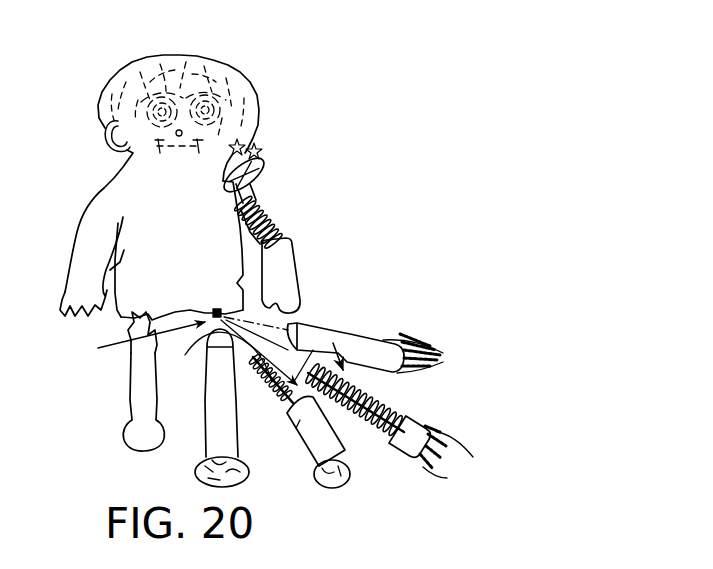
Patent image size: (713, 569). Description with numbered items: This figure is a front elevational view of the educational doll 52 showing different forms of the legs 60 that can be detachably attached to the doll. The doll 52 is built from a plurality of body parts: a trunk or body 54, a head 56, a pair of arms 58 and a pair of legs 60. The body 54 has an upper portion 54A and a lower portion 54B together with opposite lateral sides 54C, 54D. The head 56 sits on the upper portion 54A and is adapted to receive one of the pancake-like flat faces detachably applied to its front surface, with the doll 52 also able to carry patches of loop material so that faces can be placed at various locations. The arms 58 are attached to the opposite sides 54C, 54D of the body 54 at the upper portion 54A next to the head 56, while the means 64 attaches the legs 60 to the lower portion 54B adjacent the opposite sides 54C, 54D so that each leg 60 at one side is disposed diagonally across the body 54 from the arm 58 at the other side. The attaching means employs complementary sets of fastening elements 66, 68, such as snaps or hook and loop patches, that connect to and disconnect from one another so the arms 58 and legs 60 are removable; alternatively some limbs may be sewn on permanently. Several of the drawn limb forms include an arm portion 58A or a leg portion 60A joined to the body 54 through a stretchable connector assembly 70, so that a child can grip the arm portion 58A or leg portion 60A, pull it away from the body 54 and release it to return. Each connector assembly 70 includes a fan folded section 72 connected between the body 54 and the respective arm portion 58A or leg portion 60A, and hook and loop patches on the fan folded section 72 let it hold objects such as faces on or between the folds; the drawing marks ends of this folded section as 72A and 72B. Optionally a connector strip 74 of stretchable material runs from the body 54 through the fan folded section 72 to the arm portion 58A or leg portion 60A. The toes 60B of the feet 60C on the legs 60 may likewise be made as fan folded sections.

The educational doll 52 is at (312, 95).
The body 54 is at (176, 256).
The upper portion of the body 54A is at (176, 201).
The lower portion of the body 54B is at (173, 298).
The lateral side of the body 54C is at (247, 269).
The lateral side of the body 54D is at (118, 266).
The head 56 is at (197, 55).
The arm 58 is at (90, 215).
The arm portion 58A is at (297, 279).
The leg 60 is at (127, 398).
The leg portion 60A is at (300, 453).
The toes 60B is at (442, 356).
The foot 60C is at (390, 342).
The means for attaching the legs 64 is at (136, 342).
The fastening element 66 is at (217, 309).
The fastening element 68 is at (219, 361).
The stretchable connector assembly 70 is at (281, 203).
The fan folded section 72 is at (251, 204).
The spring first end 72A is at (354, 413).
The spring second end 72B is at (277, 373).
The connector strip 74 is at (275, 232).